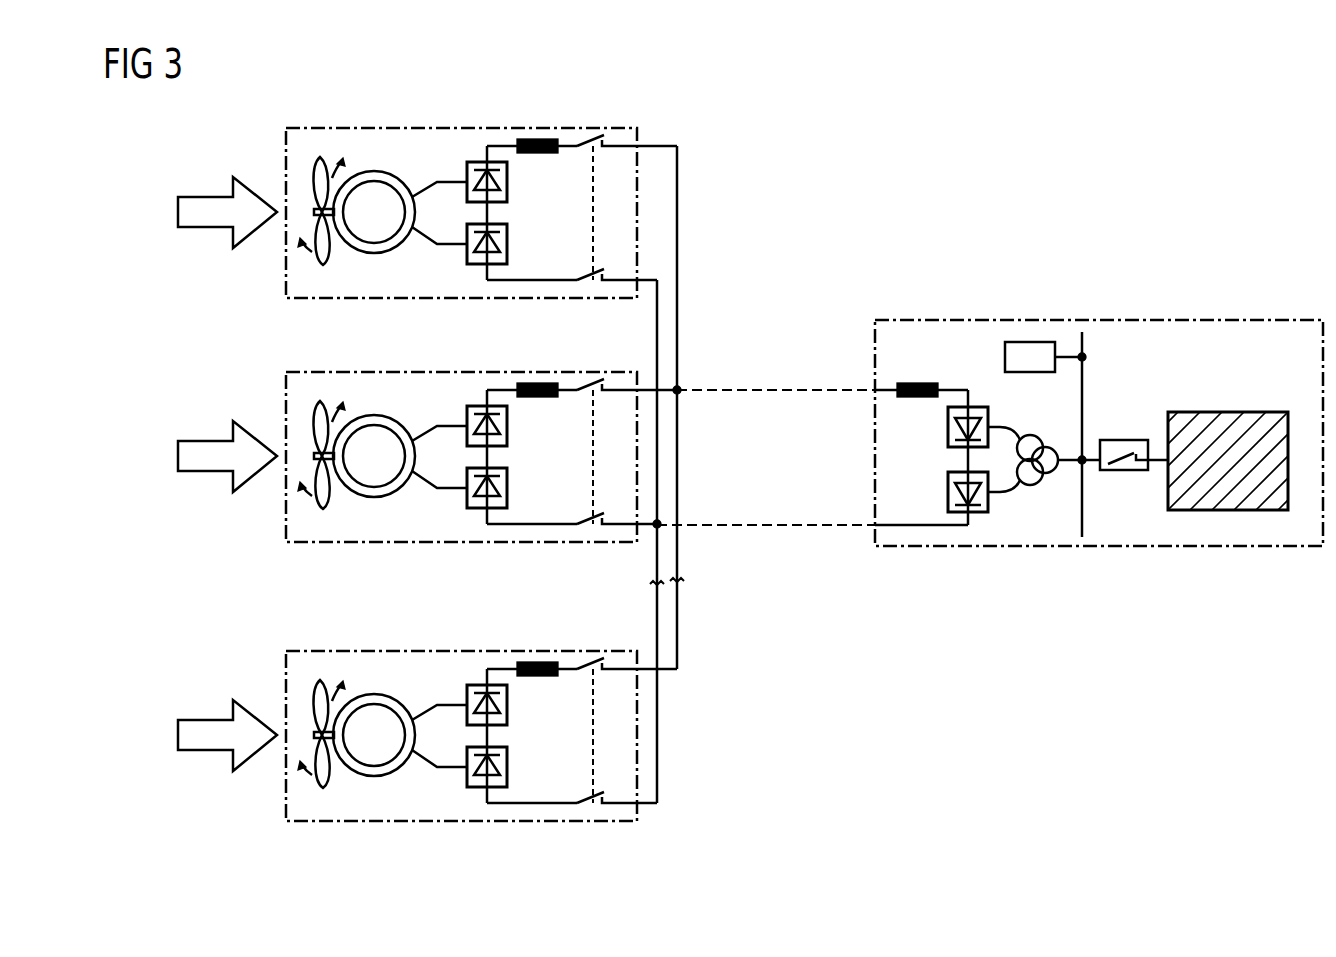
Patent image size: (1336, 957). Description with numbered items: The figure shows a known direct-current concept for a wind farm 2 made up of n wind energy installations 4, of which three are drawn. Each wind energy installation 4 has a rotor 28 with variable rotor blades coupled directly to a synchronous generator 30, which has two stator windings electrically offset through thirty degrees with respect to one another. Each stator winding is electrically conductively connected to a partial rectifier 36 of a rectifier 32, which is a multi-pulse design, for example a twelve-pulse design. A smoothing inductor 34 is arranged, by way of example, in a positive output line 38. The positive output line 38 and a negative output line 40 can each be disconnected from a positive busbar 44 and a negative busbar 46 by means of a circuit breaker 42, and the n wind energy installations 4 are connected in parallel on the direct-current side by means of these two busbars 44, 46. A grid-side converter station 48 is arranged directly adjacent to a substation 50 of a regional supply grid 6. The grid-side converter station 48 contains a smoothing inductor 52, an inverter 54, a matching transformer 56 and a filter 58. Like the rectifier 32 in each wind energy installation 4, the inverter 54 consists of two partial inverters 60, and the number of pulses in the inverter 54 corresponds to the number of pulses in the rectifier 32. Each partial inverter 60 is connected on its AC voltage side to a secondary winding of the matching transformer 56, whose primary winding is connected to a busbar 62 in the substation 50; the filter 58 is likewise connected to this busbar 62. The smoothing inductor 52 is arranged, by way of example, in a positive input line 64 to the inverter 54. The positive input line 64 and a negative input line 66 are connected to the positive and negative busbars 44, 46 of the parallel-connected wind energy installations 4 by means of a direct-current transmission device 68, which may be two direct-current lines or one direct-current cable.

The wind farm 2 is at (776, 686).
The wind energy installation 4 is at (286, 168).
The regional supply grid 6 is at (1228, 511).
The rotor 28 is at (319, 156).
The synchronous generator 30 is at (373, 171).
The rectifier 32 is at (512, 208).
The smoothing inductor 34 is at (538, 139).
The partial rectifier 36 is at (507, 182).
The positive output line 38 is at (497, 146).
The negative output line 40 is at (522, 282).
The circuit breaker 42 is at (596, 134).
The positive busbar 44 is at (679, 612).
The negative busbar 46 is at (659, 697).
The grid-side converter station 48 is at (992, 531).
The substation 50 is at (935, 547).
The smoothing inductor 52 is at (916, 383).
The inverter 54 is at (954, 458).
The matching transformer 56 is at (1030, 486).
The filter 58 is at (1025, 342).
The partial inverter 60 is at (948, 427).
The busbar 62 is at (1083, 526).
The positive input line 64 is at (875, 390).
The negative input line 66 is at (875, 526).
The direct-current transmission device 68 is at (749, 496).